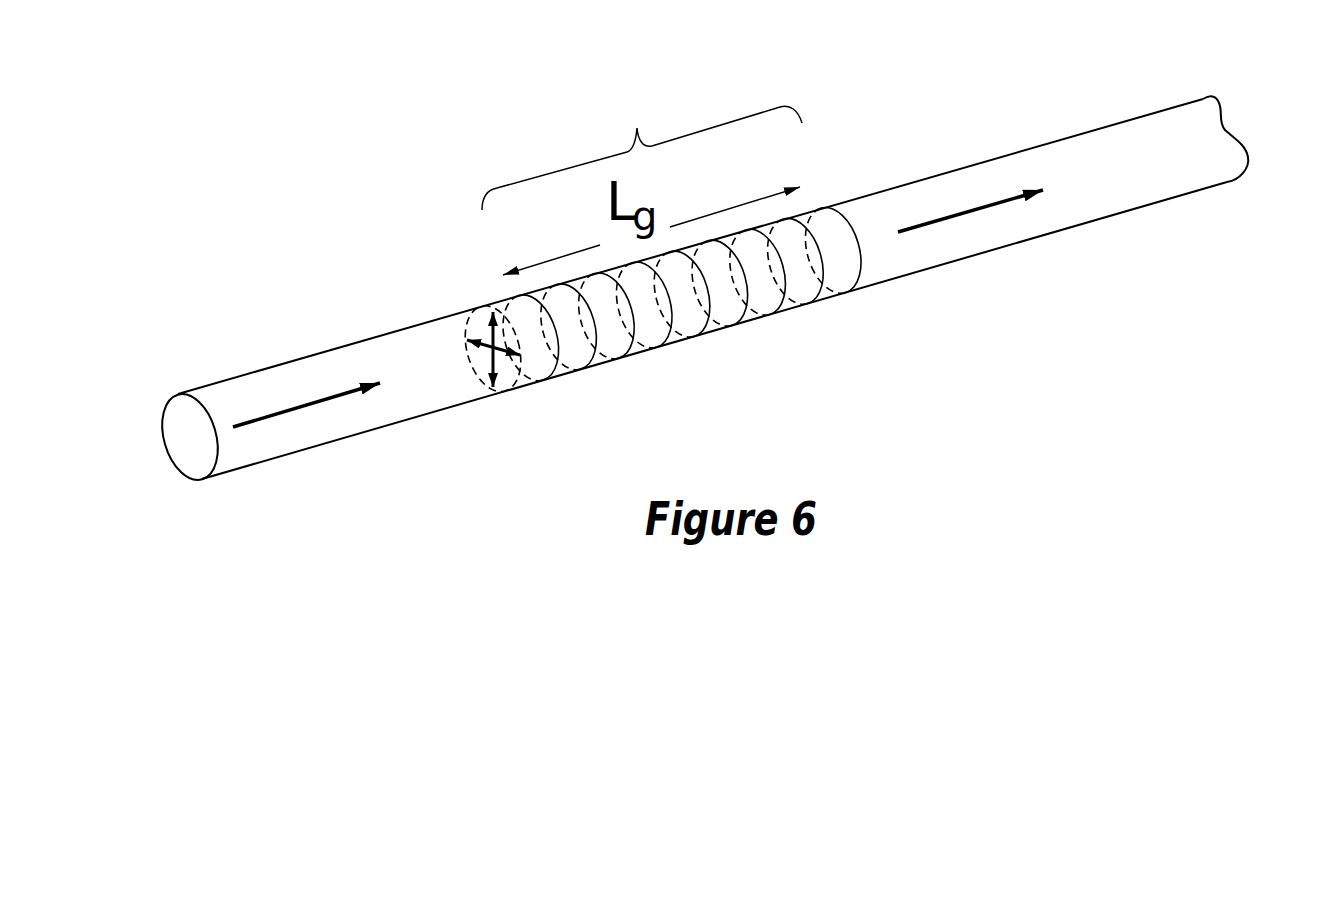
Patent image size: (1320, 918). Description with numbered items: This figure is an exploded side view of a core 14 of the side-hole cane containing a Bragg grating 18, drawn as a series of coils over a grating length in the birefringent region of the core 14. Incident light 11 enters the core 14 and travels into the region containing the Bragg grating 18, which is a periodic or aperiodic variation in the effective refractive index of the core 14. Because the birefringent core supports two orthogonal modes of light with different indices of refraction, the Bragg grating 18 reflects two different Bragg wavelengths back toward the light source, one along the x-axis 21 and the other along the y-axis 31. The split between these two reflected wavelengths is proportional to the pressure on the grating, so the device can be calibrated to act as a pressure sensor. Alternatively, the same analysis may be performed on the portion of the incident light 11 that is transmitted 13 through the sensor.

The incident light 11 is at (318, 400).
The transmitted light 13 is at (953, 213).
The core 14 is at (1130, 148).
The Bragg grating 18 is at (642, 151).
The x-axis 21 is at (492, 335).
The y-axis 31 is at (505, 365).